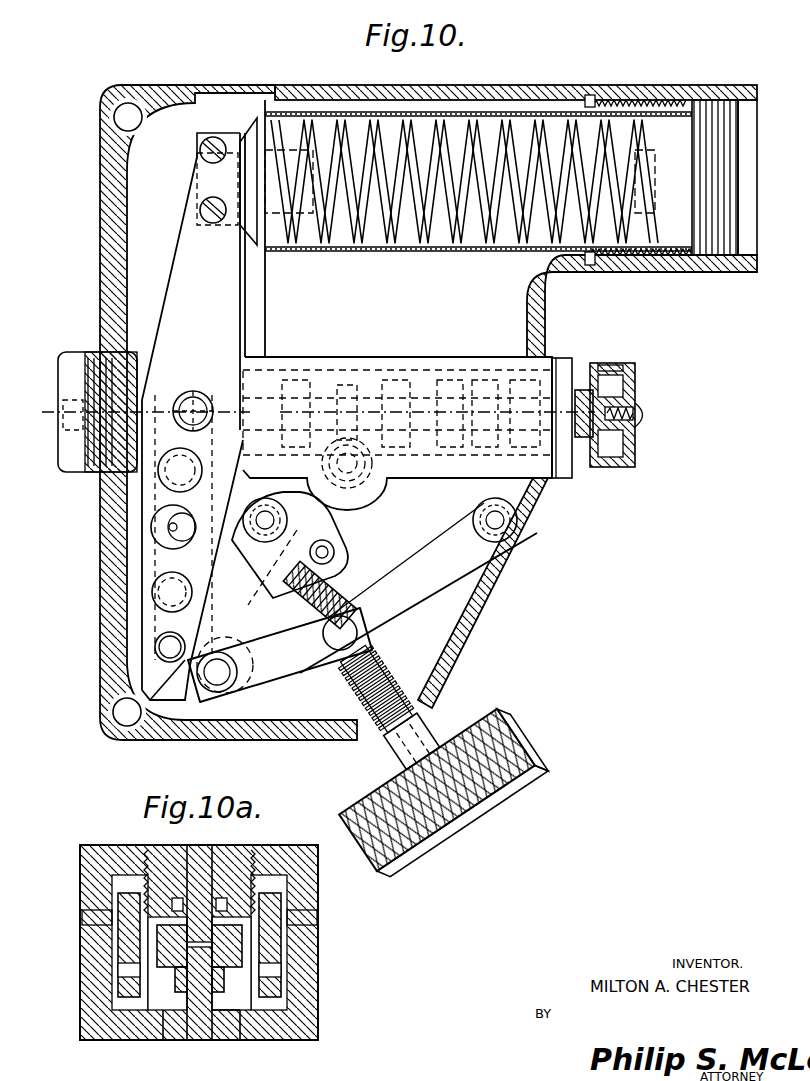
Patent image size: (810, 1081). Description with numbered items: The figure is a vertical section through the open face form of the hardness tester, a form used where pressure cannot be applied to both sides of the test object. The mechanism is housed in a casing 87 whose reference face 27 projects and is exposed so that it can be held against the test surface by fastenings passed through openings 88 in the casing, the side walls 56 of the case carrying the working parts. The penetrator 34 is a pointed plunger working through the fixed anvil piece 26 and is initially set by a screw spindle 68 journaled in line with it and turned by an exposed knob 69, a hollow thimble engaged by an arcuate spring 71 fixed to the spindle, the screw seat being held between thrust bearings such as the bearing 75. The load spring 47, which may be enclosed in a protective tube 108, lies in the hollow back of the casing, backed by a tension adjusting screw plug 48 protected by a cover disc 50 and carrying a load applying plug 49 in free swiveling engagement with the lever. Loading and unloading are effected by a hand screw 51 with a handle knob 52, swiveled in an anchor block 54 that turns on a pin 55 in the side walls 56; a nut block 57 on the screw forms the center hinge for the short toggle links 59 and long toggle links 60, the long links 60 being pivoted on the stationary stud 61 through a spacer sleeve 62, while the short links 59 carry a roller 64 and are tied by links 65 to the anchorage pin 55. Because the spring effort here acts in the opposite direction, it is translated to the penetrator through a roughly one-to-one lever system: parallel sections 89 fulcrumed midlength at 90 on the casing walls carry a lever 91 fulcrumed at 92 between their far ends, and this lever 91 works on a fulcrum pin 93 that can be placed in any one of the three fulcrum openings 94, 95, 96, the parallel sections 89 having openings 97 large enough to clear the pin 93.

In FIG. 10, the casing 87 is at (462, 90).
In FIG. 10, the openings 88 is at (113, 117).
In FIG. 10, the load applying plug 49 is at (247, 142).
In FIG. 10, the parallel sections 89 is at (170, 246).
In FIG. 10A, the parallel sections 89 is at (128, 893).
In FIG. 10, the protective tube 108 is at (428, 252).
In FIG. 10, the load spring 47 is at (506, 250).
In FIG. 10, the tension adjusting screw plug 48 is at (672, 262).
In FIG. 10, the cover disc 50 is at (753, 215).
In FIG. 10, the reference face 27 is at (58, 375).
In FIG. 10, the penetrator 34 is at (63, 418).
In FIG. 10A, the penetrator 34 is at (203, 1034).
In FIG. 10, the fulcrum 90 is at (193, 394).
In FIG. 10A, the fulcrum 90 is at (112, 918).
In FIG. 10, the spring 71 is at (612, 363).
In FIG. 10, the exposed knob 69 is at (636, 382).
In FIG. 10, the screw spindle 68 is at (582, 440).
In FIG. 10A, the screw spindle 68 is at (203, 856).
In FIG. 10, the fulcrum opening 94 is at (150, 477).
In FIG. 10, the fulcrum opening 95 is at (184, 522).
In FIG. 10, the fulcrum pin 93 is at (152, 527).
In FIG. 10, the openings 97 is at (160, 540).
In FIG. 10, the fulcrum opening 96 is at (152, 596).
In FIG. 10, the fulcrum 92 is at (155, 648).
In FIG. 10, the lever 91 is at (183, 698).
In FIG. 10A, the lever 91 is at (164, 968).
In FIG. 10, the pin 55 is at (262, 508).
In FIG. 10, the anchor block 54 is at (333, 546).
In FIG. 10, the long toggle links 60 is at (420, 552).
In FIG. 10, the spacer sleeve 62 is at (484, 505).
In FIG. 10, the stationary stud 61 is at (486, 530).
In FIG. 10, the links 65 is at (252, 630).
In FIG. 10, the nut block 57 is at (358, 622).
In FIG. 10, the short toggle links 59 is at (285, 679).
In FIG. 10, the roller 64 is at (232, 692).
In FIG. 10, the hand screw 51 is at (400, 685).
In FIG. 10, the handle knob 52 is at (525, 751).
In FIG. 10A, the thrust bearing 75 is at (235, 865).
In FIG. 10A, the side walls 56 is at (90, 1002).
In FIG. 10A, the fixed anvil piece 26 is at (233, 1036).